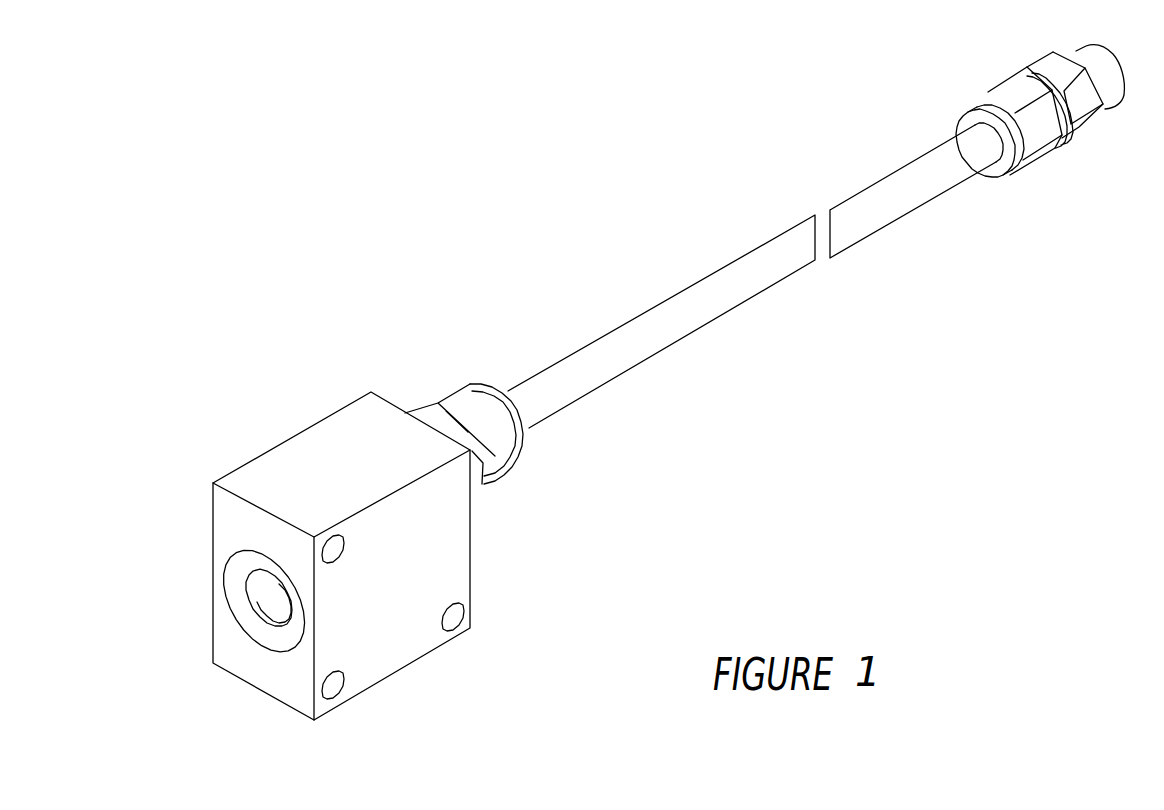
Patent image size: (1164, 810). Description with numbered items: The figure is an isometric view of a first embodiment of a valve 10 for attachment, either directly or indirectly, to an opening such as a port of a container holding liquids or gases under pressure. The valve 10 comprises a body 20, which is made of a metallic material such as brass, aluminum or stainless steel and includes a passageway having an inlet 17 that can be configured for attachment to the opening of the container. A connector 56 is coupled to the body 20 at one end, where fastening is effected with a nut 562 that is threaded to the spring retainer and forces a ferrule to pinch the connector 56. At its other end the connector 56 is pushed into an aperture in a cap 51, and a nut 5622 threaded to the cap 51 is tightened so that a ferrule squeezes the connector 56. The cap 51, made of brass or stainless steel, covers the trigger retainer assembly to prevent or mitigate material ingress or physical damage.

The valve 10 is at (516, 172).
The body 20 is at (330, 413).
The inlet 17 is at (268, 595).
The nut 562 is at (467, 397).
The connector 56 is at (743, 248).
The nut 5622 is at (993, 89).
The cap 51 is at (1113, 106).